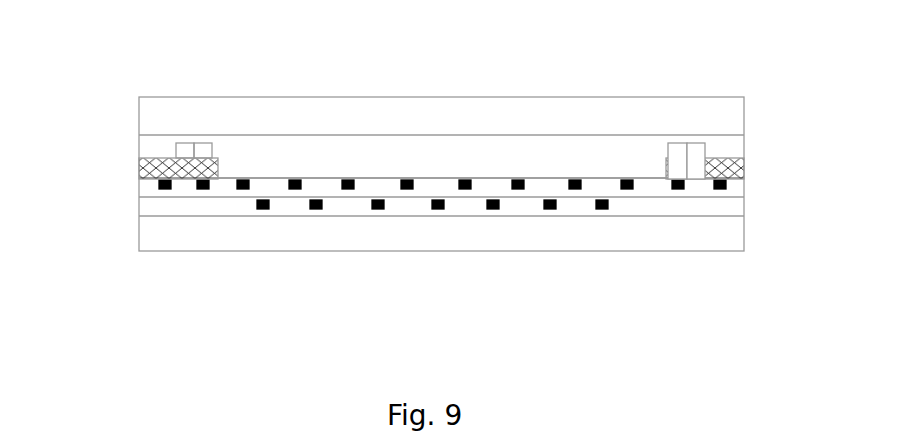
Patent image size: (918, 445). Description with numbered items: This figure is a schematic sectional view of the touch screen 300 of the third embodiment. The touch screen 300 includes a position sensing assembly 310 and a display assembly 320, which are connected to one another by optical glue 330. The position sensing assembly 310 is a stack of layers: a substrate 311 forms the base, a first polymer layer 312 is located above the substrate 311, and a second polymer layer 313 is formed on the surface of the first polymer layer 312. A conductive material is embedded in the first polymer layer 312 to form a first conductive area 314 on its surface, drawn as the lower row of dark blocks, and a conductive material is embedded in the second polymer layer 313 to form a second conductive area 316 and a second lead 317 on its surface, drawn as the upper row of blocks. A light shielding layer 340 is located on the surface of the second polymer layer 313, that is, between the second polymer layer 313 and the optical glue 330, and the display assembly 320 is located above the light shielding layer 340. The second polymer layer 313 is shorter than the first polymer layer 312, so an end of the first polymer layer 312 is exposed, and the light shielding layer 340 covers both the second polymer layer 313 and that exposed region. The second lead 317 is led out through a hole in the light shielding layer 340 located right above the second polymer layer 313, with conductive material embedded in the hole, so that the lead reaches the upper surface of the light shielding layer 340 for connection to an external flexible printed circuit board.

The touch screen 300 is at (213, 58).
The position sensing assembly 310 is at (424, 226).
The substrate 311 is at (743, 233).
The first polymer layer 312 is at (138, 209).
The second polymer layer 313 is at (138, 189).
The first conductive area 314 is at (441, 208).
The second conductive area 316 is at (350, 189).
The second lead 317 is at (212, 158).
The display assembly 320 is at (532, 118).
The optical glue 330 is at (410, 162).
The light shielding layer 340 is at (802, 158).